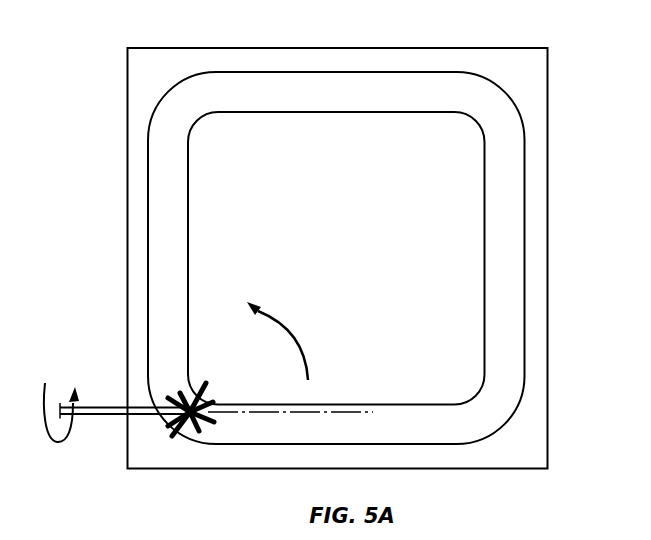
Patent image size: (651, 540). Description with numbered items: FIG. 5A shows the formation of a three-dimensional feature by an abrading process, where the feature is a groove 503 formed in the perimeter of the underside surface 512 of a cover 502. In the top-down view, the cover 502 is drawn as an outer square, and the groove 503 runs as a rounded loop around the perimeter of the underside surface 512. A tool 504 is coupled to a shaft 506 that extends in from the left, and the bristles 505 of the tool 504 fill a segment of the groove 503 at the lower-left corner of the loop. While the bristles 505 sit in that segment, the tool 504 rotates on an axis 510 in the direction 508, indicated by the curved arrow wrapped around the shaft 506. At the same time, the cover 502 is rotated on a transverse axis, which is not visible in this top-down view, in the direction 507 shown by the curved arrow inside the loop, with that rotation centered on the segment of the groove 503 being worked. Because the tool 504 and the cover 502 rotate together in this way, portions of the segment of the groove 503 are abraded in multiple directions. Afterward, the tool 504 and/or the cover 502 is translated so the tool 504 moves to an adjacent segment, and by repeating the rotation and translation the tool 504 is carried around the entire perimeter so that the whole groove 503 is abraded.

The cover 502 is at (549, 375).
The groove 503 is at (525, 342).
The tool 504 is at (216, 392).
The bristles 505 is at (185, 435).
The shaft 506 is at (102, 407).
The direction 507 is at (295, 343).
The direction 508 is at (58, 443).
The axis 510 is at (363, 410).
The underside surface 512 is at (522, 58).